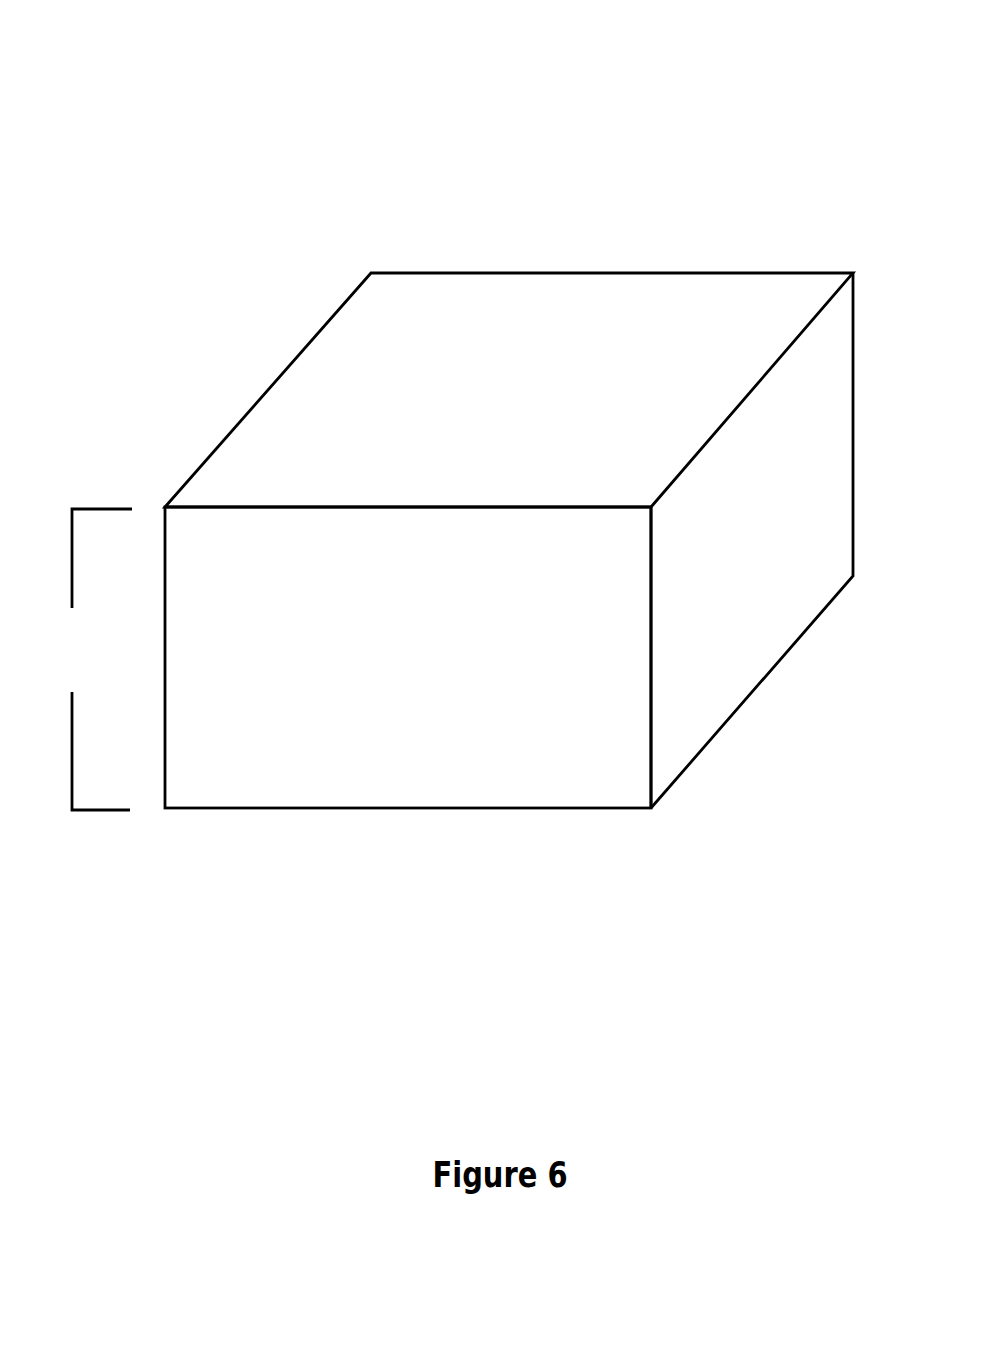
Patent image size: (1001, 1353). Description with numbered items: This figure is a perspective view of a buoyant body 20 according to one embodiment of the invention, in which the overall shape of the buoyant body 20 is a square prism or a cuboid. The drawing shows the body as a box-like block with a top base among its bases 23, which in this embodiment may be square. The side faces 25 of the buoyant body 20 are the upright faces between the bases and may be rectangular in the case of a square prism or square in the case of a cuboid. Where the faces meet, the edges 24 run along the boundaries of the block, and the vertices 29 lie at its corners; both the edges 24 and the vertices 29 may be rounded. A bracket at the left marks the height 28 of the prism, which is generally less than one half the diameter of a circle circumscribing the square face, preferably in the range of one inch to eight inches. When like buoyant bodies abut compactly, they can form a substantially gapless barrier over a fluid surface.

The buoyant body 20 is at (480, 483).
The bases 23 is at (563, 340).
The edges 24 is at (652, 677).
The side faces 25 is at (453, 752).
The height 28 is at (88, 659).
The vertices 29 is at (651, 816).